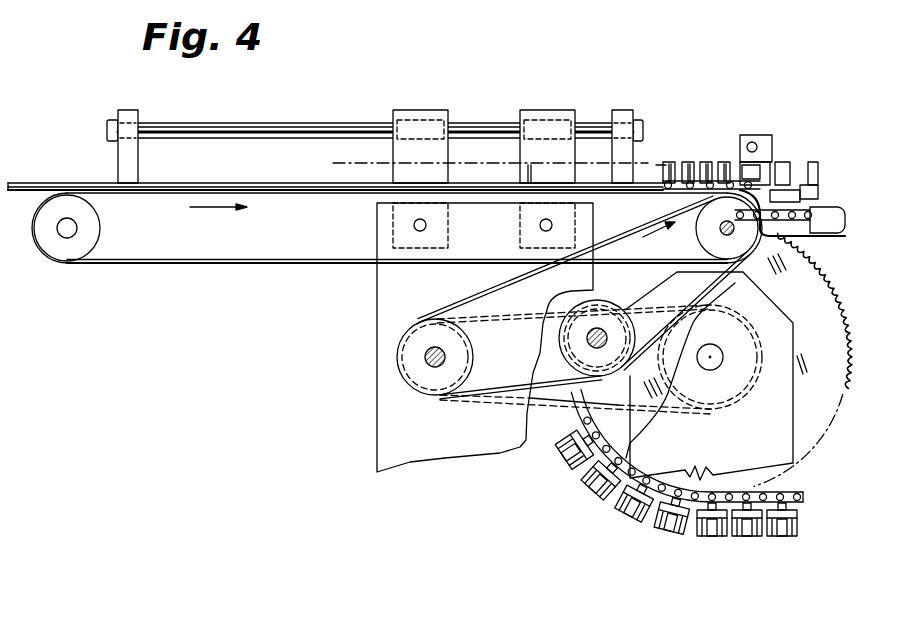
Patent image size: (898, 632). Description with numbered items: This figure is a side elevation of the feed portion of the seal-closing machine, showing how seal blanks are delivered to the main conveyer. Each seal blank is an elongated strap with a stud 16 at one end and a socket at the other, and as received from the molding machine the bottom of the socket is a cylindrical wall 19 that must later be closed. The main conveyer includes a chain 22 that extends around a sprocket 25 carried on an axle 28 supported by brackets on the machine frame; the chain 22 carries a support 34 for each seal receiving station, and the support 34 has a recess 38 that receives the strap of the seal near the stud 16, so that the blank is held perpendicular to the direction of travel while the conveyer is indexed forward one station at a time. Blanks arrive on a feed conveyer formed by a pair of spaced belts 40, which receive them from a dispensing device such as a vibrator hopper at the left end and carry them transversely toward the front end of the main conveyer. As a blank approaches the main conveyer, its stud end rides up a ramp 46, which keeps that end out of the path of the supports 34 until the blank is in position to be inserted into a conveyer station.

The stud 16 is at (686, 168).
The cylindrical wall 19 is at (660, 164).
The chain 22 is at (650, 514).
The sprocket 25 is at (830, 365).
The axle 28 is at (712, 370).
The support 34 is at (794, 516).
The recess 38 is at (800, 178).
The belts 40 is at (156, 195).
The ramp 46 is at (652, 201).